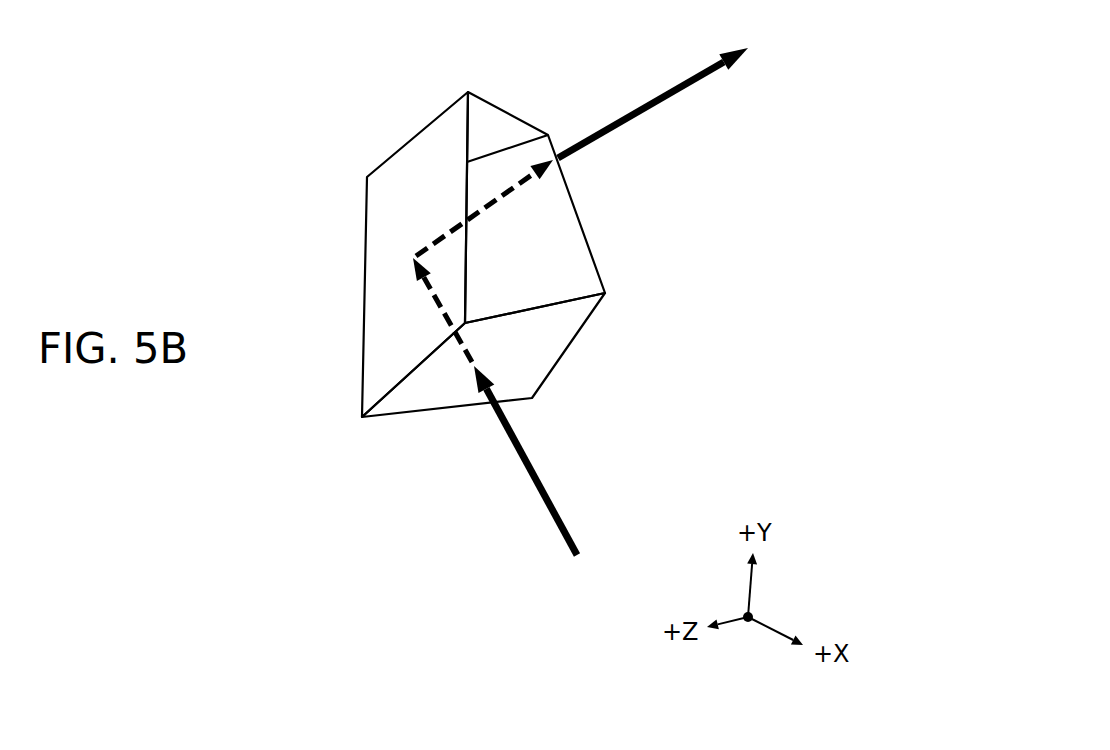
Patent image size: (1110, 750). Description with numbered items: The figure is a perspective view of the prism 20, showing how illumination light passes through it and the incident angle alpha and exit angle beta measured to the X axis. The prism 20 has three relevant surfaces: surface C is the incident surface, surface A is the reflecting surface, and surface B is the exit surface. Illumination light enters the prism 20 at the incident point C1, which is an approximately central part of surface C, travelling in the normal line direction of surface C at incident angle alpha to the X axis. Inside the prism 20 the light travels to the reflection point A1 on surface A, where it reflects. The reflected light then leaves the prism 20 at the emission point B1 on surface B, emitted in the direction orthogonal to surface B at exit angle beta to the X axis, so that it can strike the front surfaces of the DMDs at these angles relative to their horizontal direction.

The prism 20 is at (303, 46).
The surface A is at (415, 167).
The surface B is at (582, 220).
The surface C is at (533, 350).
The reflection point A1 is at (413, 258).
The emission point B1 is at (553, 148).
The incident point C1 is at (468, 363).